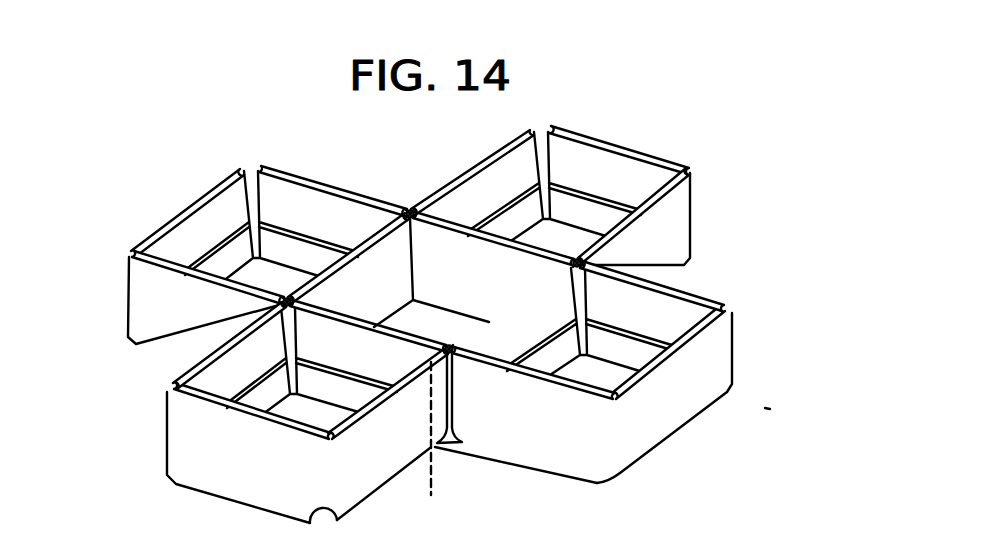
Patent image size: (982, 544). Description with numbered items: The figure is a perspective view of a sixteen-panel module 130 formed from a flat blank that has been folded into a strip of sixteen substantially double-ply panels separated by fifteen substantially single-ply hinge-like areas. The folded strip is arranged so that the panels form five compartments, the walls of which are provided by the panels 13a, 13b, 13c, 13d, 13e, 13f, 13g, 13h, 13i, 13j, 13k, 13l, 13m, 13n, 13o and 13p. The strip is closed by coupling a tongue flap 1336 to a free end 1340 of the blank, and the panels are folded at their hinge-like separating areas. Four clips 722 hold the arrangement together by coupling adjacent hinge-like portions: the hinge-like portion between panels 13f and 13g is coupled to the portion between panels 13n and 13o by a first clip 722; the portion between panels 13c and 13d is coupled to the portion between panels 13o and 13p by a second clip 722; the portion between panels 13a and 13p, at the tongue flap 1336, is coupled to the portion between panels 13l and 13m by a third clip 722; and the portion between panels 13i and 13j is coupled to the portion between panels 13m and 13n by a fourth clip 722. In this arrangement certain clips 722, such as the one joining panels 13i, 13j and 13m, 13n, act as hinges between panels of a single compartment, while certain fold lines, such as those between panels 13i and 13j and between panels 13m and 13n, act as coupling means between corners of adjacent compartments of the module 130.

The panel 13a is at (364, 455).
The panel 13b is at (201, 467).
The panel 13c is at (213, 379).
The panel 13d is at (143, 324).
The panel 13e is at (180, 238).
The panel 13f is at (274, 221).
The panel 13g is at (468, 183).
The panel 13h is at (569, 174).
The panel 13i is at (634, 257).
The panel 13j is at (603, 311).
The panel 13k is at (651, 409).
The panel 13l is at (497, 426).
The panel 13m is at (530, 318).
The panel 13n is at (426, 274).
The panel 13o is at (343, 304).
The panel 13p is at (336, 357).
The clip 722 is at (406, 210).
The tongue flap 1336 is at (430, 443).
The free end 1340 is at (455, 398).
The 16-panel module 130 is at (775, 411).